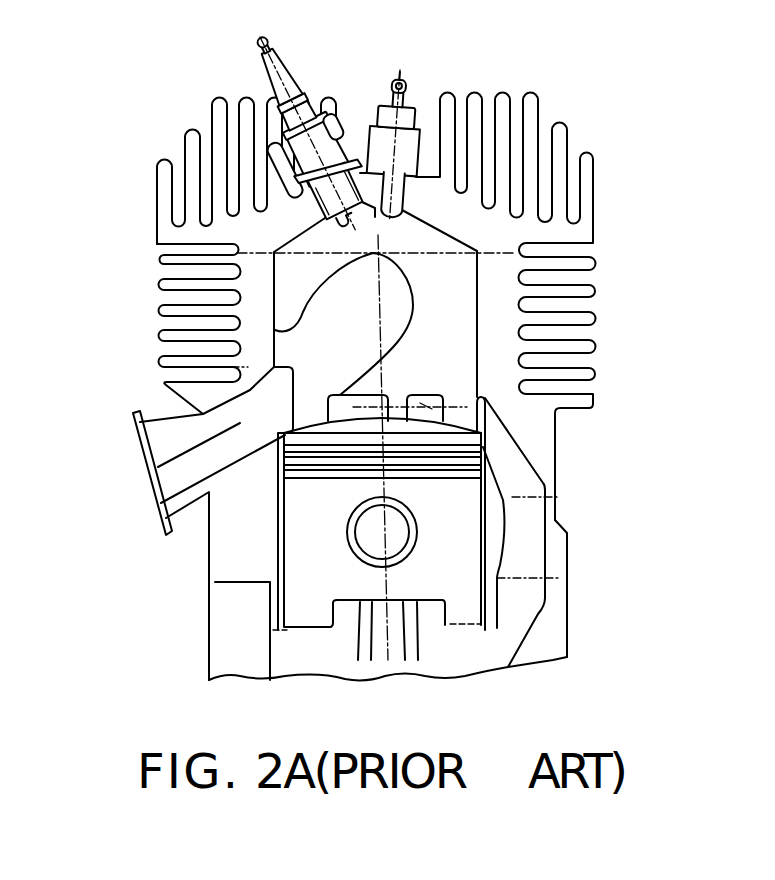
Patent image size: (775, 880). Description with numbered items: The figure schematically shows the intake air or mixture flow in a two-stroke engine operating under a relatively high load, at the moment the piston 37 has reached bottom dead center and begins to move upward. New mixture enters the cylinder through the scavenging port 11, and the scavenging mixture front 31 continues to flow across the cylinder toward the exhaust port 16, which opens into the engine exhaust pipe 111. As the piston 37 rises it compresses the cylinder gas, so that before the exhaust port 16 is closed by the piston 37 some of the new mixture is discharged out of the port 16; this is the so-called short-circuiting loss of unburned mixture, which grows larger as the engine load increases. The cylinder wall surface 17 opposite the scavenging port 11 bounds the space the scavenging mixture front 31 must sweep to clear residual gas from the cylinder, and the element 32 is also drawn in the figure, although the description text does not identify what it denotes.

The scavenging port 11 is at (477, 413).
The exhaust port 16 is at (150, 467).
The opposite cylinder wall surface 17 is at (207, 367).
The scavenging mixture front 31 is at (275, 283).
The combustion chamber 32 is at (403, 303).
The piston 37 is at (468, 502).
The engine exhaust pipe 111 is at (147, 450).